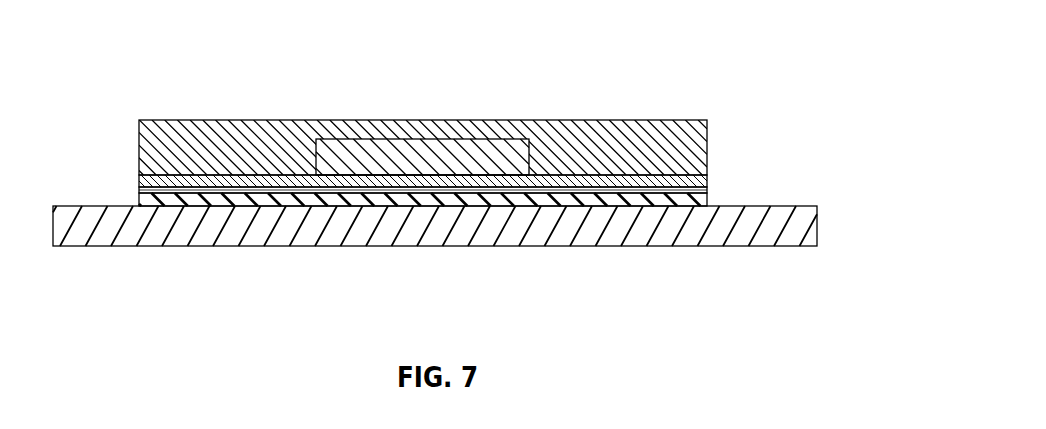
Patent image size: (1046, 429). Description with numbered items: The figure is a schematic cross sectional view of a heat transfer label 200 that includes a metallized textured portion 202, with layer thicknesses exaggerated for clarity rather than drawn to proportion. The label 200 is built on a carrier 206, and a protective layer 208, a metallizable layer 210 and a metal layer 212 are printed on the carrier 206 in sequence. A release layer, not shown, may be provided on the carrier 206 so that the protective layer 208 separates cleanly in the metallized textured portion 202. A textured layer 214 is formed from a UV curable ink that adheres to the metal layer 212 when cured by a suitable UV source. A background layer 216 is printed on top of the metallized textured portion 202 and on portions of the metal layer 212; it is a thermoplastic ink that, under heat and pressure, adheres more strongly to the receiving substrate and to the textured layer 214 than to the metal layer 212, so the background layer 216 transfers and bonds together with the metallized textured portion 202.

The heat transfer label 200 is at (474, 128).
The metallized textured portion 202 is at (509, 142).
The carrier 206 is at (812, 238).
The protective layer 208 is at (707, 198).
The metallizable layer 210 is at (707, 189).
The metal layer 212 is at (707, 180).
The textured layer 214 is at (527, 152).
The background layer 216 is at (700, 124).